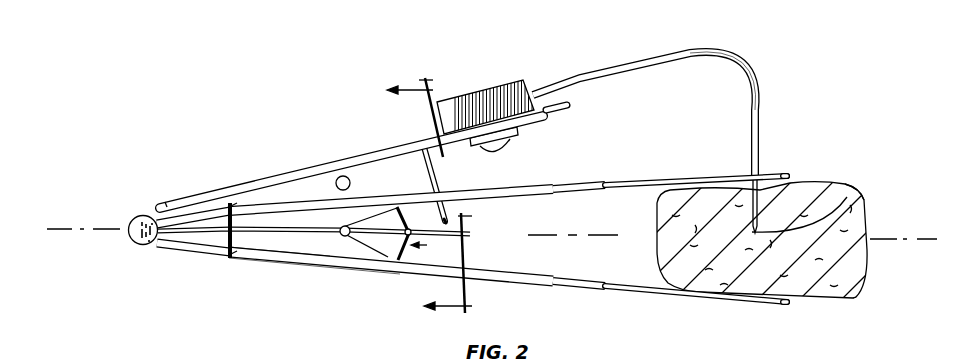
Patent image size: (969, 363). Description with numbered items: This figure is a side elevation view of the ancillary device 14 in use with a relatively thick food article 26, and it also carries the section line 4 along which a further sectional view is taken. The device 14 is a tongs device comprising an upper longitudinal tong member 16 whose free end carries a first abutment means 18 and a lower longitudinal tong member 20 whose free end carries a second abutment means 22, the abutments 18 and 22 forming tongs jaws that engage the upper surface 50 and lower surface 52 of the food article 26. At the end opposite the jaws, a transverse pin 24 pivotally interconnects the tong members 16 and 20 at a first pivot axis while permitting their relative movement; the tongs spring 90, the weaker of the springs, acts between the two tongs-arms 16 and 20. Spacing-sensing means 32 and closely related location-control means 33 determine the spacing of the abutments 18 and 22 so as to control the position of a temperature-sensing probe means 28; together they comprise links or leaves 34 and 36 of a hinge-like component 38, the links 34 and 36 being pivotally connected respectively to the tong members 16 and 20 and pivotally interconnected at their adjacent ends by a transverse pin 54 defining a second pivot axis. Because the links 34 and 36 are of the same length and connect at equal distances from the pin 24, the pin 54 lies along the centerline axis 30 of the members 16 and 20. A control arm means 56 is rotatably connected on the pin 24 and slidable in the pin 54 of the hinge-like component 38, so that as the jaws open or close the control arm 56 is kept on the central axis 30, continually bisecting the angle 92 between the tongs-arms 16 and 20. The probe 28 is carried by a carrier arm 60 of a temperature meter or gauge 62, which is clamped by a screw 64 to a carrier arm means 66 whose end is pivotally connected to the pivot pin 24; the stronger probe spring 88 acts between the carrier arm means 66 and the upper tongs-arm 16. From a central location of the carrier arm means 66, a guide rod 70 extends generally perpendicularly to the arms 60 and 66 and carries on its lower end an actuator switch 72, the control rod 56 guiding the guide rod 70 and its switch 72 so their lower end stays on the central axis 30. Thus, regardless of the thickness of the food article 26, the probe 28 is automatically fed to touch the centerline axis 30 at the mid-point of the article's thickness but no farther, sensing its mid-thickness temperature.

The section line 4- 4 is at (431, 198).
The device 14 is at (631, 50).
The upper longitudinal tong member 16 is at (613, 176).
The first abutment means 18 is at (784, 172).
The lower longitudinal tong member 20 is at (639, 297).
The second abutment means 22 is at (758, 307).
The transverse pin 24 is at (131, 239).
The food article 26 is at (845, 181).
The temperature-sensing probe means 28 is at (847, 197).
The centerline axis 30 is at (889, 222).
The spacing-sensing means 32 is at (343, 281).
The location-control means 33 is at (281, 243).
The link 34 is at (398, 217).
The link 36 is at (402, 245).
The hinge-like component 38 is at (429, 251).
The upper surface 50 is at (818, 181).
The lower surface 52 is at (821, 299).
The transverse pin 54 is at (409, 226).
The control arm means 56 is at (305, 226).
The carrier arm 60 is at (573, 76).
The temperature meter or gauge 62 is at (481, 93).
The screw 64 is at (508, 142).
The carrier arm means 66 is at (280, 175).
The guide rod 70 is at (436, 169).
The actuator switch 72 is at (450, 221).
The probe spring 88 is at (350, 182).
The tongs spring 90 is at (346, 237).
The angle 92 is at (230, 241).